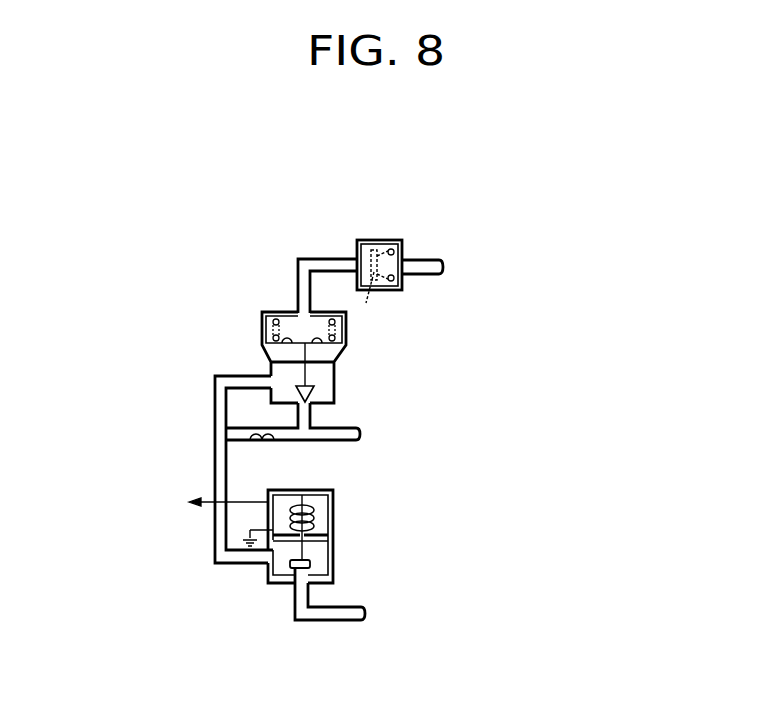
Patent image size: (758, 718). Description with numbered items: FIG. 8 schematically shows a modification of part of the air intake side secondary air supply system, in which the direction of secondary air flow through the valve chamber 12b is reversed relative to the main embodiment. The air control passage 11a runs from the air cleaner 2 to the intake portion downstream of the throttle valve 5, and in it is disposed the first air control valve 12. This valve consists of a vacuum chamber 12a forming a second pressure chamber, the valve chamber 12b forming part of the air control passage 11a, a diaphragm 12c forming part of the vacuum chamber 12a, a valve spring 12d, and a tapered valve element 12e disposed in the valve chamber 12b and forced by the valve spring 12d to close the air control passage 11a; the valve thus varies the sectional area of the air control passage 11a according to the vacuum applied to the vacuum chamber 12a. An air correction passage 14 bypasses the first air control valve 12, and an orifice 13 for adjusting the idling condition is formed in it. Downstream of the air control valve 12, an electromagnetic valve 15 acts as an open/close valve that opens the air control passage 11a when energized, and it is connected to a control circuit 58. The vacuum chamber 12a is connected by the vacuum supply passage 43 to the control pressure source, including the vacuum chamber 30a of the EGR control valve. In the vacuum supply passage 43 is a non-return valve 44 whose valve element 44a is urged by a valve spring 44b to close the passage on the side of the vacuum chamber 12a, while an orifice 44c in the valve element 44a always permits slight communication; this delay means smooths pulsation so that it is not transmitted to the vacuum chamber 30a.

The vacuum supply passage 43 is at (322, 260).
The non-return valve 44 is at (406, 256).
The valve element 44a is at (375, 246).
The valve spring 44b is at (393, 291).
The orifice 44c is at (385, 300).
The first air control valve 12 is at (347, 331).
The vacuum chamber 12a is at (283, 312).
The valve chamber 12b is at (337, 381).
The diaphragm 12c is at (341, 352).
The valve spring 12d is at (262, 342).
The tapered valve element 12e is at (322, 403).
The air control passage 11a is at (216, 384).
The orifice 13 is at (270, 445).
The air correction passage 14 is at (240, 447).
The electromagnetic valve 15 is at (334, 539).
The control circuit 58 is at (152, 506).
The vacuum chamber 30a is at (579, 283).
The air cleaner 2 is at (493, 441).
The throttle valve 5 is at (528, 626).